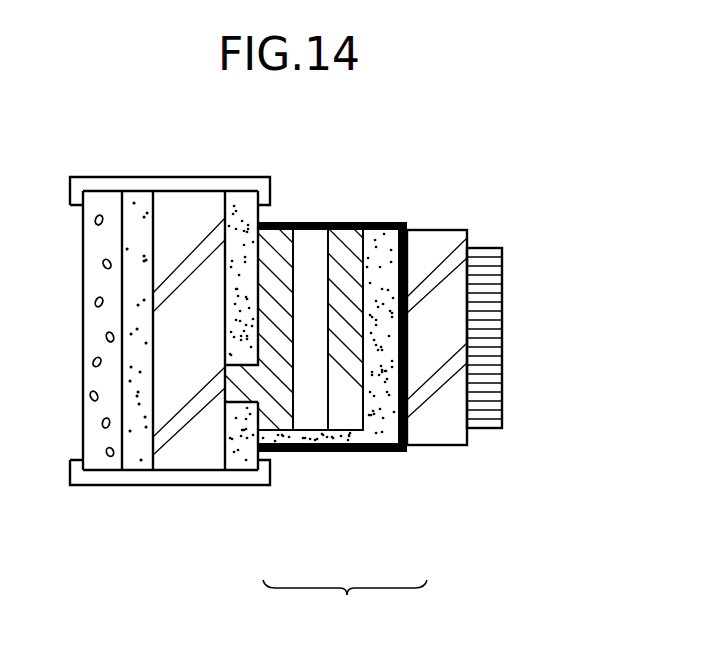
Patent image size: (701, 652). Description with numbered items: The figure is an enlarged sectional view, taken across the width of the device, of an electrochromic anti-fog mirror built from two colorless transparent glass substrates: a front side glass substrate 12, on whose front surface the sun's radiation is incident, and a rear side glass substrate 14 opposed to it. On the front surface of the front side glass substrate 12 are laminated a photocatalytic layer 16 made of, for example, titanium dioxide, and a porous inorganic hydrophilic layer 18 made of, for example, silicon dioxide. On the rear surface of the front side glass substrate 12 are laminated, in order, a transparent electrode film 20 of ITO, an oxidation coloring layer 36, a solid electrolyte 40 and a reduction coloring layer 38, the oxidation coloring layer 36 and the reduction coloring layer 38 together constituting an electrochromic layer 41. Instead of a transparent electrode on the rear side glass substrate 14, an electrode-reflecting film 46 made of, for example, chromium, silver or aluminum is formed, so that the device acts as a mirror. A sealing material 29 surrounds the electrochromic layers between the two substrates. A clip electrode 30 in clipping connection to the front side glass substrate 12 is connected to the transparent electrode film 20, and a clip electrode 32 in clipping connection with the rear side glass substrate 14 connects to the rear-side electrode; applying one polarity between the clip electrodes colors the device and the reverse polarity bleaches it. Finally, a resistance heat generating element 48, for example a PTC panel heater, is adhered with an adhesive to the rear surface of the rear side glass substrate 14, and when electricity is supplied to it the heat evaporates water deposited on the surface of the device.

The front side glass substrate 12 is at (185, 462).
The rear side glass substrate 14 is at (445, 437).
The photocatalytic layer 16 is at (142, 462).
The porous inorganic hydrophilic layer 18 is at (100, 462).
The transparent electrode film 20 is at (240, 200).
The sealing material 29 is at (380, 452).
The clip electrode 30 is at (133, 185).
The clip electrode 32 is at (223, 462).
The oxidation coloring layer 36 is at (283, 452).
The reduction coloring layer 38 is at (347, 452).
The solid electrolyte 40 is at (313, 452).
The electrochromic layer 41 is at (345, 607).
The electrode-reflecting film 46 is at (375, 237).
The resistance heat generating element 48 is at (502, 327).